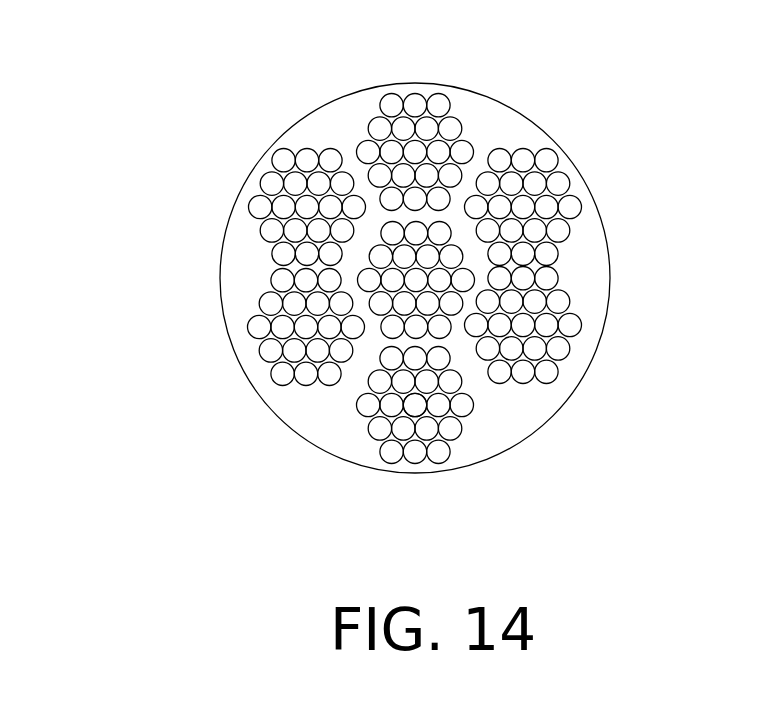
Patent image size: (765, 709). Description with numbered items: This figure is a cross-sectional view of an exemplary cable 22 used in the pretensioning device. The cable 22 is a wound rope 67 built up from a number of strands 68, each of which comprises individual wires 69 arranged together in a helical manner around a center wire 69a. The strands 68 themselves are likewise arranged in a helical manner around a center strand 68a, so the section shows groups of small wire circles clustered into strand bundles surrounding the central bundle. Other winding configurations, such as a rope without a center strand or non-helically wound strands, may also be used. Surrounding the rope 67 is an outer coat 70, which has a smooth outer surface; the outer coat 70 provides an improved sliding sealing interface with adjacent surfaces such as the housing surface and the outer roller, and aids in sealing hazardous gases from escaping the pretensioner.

The cable 22 is at (364, 275).
The wound rope 67 is at (323, 423).
The strand 68 is at (435, 268).
The center strand 68a is at (491, 267).
The individual wire 69 is at (511, 392).
The center wire 69a is at (418, 408).
The outer coat 70 is at (378, 275).